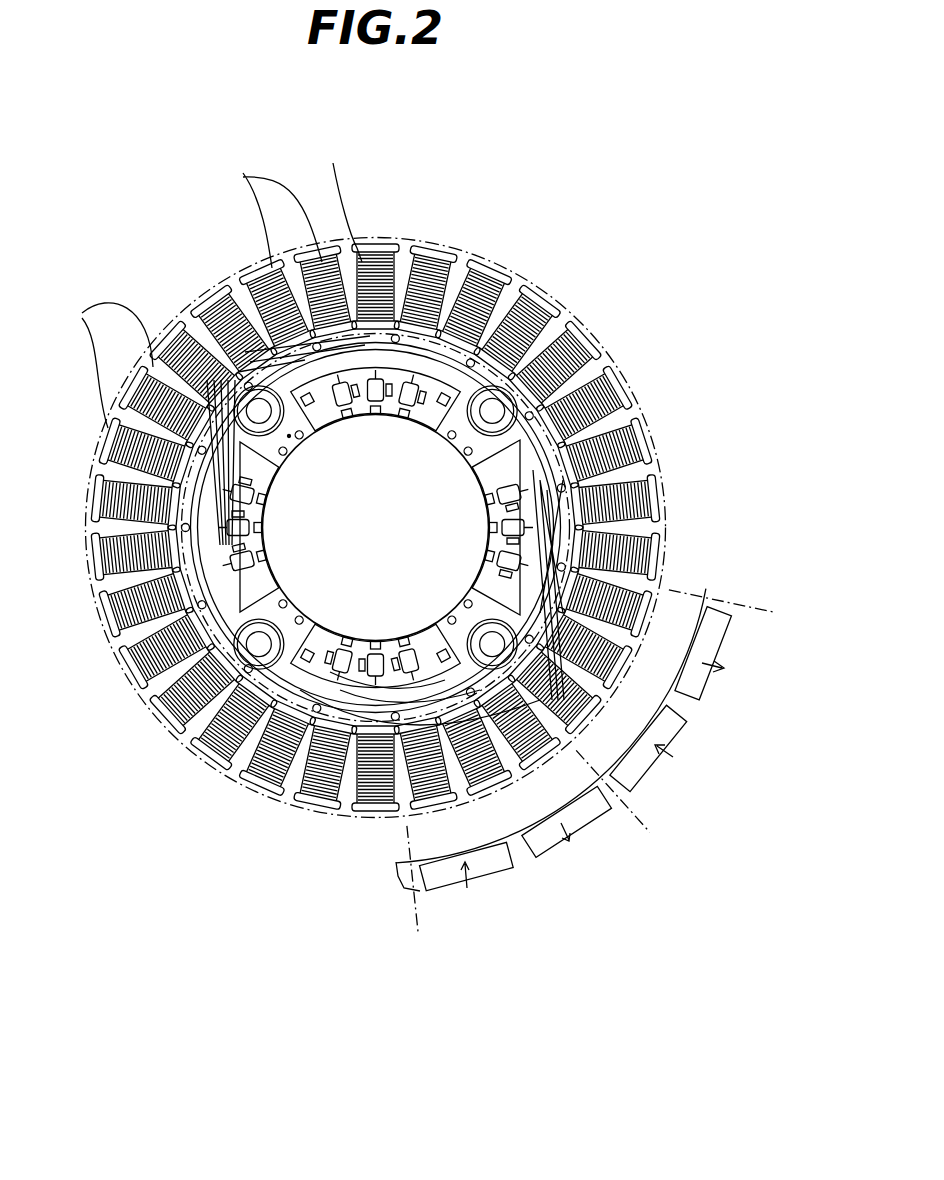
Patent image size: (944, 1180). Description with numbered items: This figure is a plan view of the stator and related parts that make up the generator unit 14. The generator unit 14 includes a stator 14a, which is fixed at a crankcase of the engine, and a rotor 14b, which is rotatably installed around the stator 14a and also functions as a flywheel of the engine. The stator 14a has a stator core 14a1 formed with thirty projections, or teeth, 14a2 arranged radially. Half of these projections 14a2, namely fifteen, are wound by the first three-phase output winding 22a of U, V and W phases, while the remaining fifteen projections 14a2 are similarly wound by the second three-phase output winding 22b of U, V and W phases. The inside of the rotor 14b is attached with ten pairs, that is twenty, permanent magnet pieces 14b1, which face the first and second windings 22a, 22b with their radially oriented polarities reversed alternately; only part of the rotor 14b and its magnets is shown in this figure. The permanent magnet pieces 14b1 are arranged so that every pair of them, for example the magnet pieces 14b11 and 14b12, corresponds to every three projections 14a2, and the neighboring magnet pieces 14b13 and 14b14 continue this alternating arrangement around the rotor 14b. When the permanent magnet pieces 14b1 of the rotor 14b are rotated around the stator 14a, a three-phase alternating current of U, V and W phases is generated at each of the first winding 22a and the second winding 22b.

The generator unit 14 is at (138, 204).
The stator 14a is at (388, 204).
The stator core 14a1 is at (290, 436).
The projections (teeth) 14a2 is at (329, 200).
The rotor 14b is at (436, 906).
The permanent magnet pieces 14b1 is at (420, 891).
The permanent magnet piece 14b11 is at (512, 868).
The permanent magnet piece 14b12 is at (543, 846).
The permanent magnet piece 14b13 is at (680, 723).
The permanent magnet piece 14b14 is at (727, 637).
The first three-phase output winding 22a is at (258, 215).
The second three-phase output winding 22b is at (91, 365).